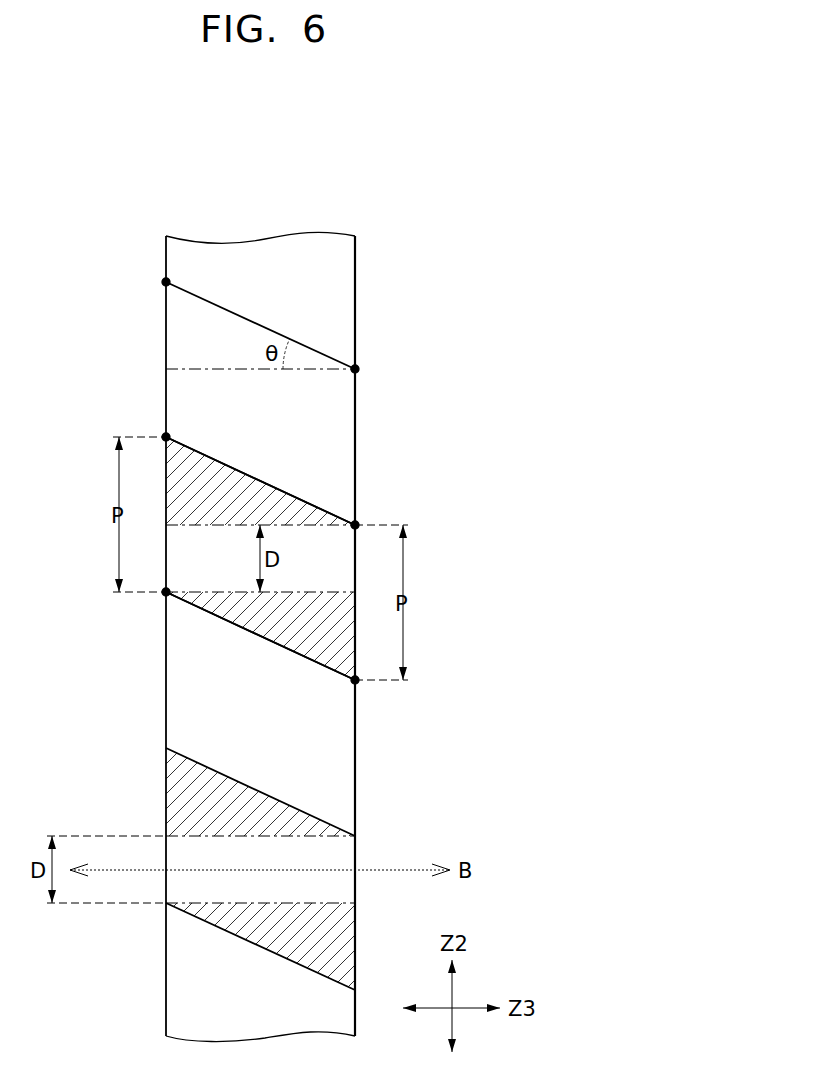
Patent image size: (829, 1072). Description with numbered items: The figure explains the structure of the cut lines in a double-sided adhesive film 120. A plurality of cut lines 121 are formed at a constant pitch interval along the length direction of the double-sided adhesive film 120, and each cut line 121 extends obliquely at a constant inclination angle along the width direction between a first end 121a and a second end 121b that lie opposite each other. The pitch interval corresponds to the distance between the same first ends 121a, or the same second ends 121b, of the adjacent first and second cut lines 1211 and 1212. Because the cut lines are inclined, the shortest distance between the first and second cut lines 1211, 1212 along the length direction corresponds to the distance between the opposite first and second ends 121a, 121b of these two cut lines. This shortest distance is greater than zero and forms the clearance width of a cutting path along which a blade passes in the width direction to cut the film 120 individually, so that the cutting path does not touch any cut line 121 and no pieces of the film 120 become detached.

The double-sided adhesive film 120 is at (380, 193).
The cut line 121 is at (262, 322).
The first end 121a is at (166, 282).
The second end 121b is at (355, 369).
The first cut line 1211 is at (263, 483).
The second cut line 1212 is at (255, 640).